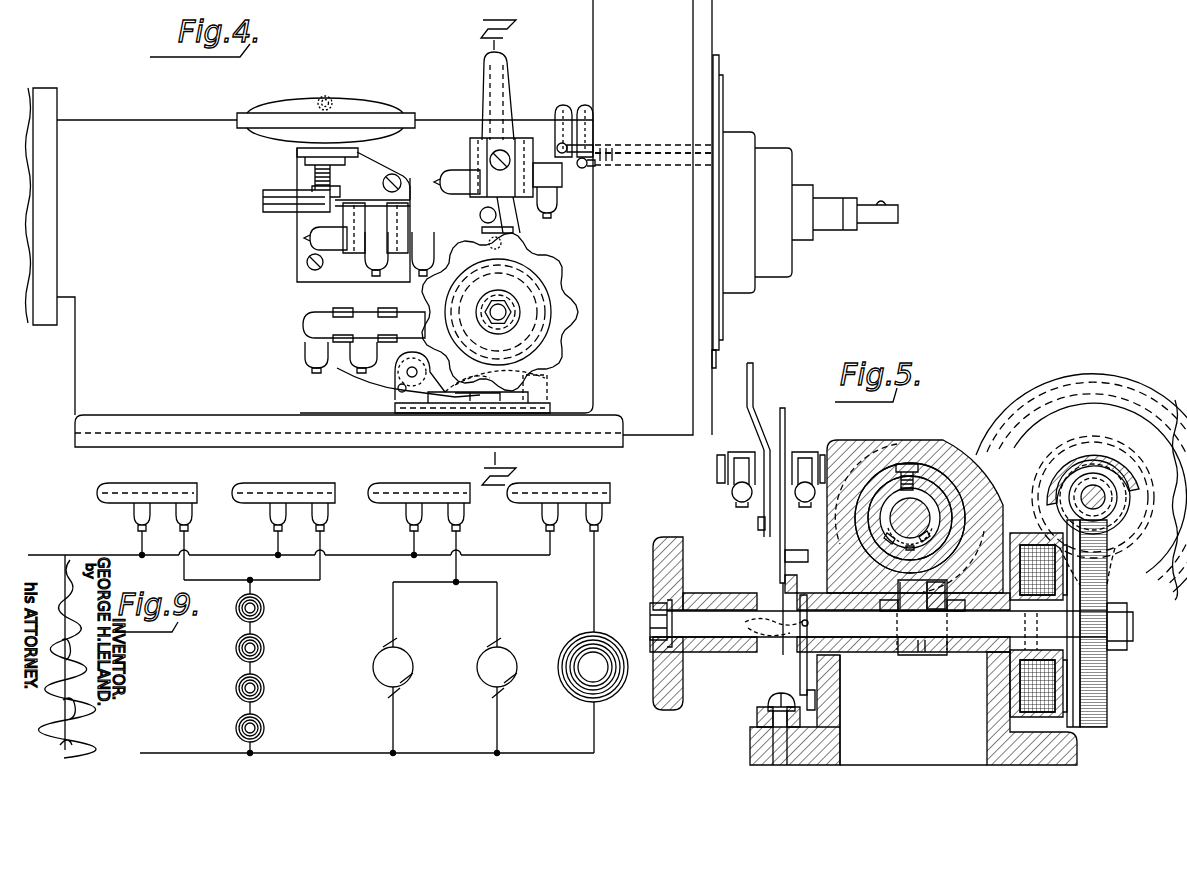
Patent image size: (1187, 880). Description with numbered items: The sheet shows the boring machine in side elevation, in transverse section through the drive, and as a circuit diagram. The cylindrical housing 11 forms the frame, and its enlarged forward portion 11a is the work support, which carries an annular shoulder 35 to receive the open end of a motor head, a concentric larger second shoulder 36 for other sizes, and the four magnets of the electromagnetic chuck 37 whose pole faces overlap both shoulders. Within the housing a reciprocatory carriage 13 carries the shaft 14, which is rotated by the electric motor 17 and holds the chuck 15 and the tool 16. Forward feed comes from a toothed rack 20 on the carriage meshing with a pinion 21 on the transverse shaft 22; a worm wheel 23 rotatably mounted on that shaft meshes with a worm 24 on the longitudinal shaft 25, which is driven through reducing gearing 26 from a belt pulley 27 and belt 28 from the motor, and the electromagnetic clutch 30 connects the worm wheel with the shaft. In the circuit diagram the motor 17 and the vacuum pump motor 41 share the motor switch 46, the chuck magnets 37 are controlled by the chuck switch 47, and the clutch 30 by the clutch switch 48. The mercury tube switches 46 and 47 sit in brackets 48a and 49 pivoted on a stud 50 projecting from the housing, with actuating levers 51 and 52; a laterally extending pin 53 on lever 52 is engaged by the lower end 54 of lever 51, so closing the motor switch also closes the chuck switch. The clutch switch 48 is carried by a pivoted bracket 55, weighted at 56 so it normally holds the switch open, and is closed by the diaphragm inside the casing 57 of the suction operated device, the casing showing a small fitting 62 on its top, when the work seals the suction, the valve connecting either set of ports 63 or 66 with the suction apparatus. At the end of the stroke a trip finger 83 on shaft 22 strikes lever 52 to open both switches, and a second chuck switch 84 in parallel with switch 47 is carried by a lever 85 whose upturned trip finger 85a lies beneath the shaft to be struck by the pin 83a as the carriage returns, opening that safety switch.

In FIG. 4, the cylindrical housing 11 is at (125, 138).
In FIG. 5, the cylindrical housing 11 is at (909, 458).
In FIG. 4, the enlarged forward portion of housing 11a is at (667, 217).
In FIG. 5, the reciprocatory carriage 13 is at (887, 490).
In FIG. 5, the shaft 14 is at (925, 510).
In FIG. 4, the chuck 15 is at (830, 218).
In FIG. 4, the tool 16 is at (876, 216).
In FIG. 4, the electric motor 17 is at (36, 87).
In FIG. 9, the electric motor 17 is at (500, 667).
In FIG. 5, the toothed rack 20 is at (878, 625).
In FIG. 5, the pinion 21 is at (908, 647).
In FIG. 4, the transverse shaft 22 is at (505, 308).
In FIG. 5, the transverse shaft 22 is at (930, 618).
In FIG. 5, the worm wheel 23 is at (1107, 684).
In FIG. 5, the worm 24 is at (1091, 470).
In FIG. 5, the shaft 25 is at (1099, 489).
In FIG. 5, the reducing gearing 26 is at (1082, 510).
In FIG. 5, the belt pulley 27 is at (1015, 432).
In FIG. 5, the belt 28 is at (980, 445).
In FIG. 9, the electro-magnetic clutch 30 is at (578, 684).
In FIG. 5, the electro-magnetic clutch 30 is at (1015, 690).
In FIG. 4, the annular shoulder 35 is at (723, 333).
In FIG. 4, the second shoulder 36 is at (714, 368).
In FIG. 9, the electro-magnetic chuck magnets 37 is at (264, 641).
In FIG. 9, the vacuum pump motor 41 is at (396, 667).
In FIG. 4, the motor switch 46 is at (455, 180).
In FIG. 9, the motor switch 46 is at (420, 491).
In FIG. 5, the motor switch 46 is at (742, 496).
In FIG. 9, the chuck switch 47 is at (150, 491).
In FIG. 5, the chuck switch 47 is at (805, 496).
In FIG. 4, the clutch switch 48 is at (325, 238).
In FIG. 9, the clutch switch 48 is at (576, 491).
In FIG. 5, the bracket 48a is at (738, 445).
In FIG. 5, the bracket 49 is at (805, 452).
In FIG. 4, the stud 50 is at (470, 153).
In FIG. 5, the stud 50 is at (716, 462).
In FIG. 4, the actuating lever 51 is at (498, 80).
In FIG. 5, the actuating lever 51 is at (752, 409).
In FIG. 4, the actuating lever 52 is at (502, 100).
In FIG. 5, the actuating lever 52 is at (787, 411).
In FIG. 4, the laterally extending pin 53 is at (482, 213).
In FIG. 5, the laterally extending pin 53 is at (780, 530).
In FIG. 4, the lower end of lever 54 is at (520, 205).
In FIG. 5, the lower end of lever 54 is at (770, 520).
In FIG. 4, the pivoted bracket 55 is at (372, 198).
In FIG. 4, the weight 56 is at (277, 213).
In FIG. 4, the casing 57 is at (283, 108).
In FIG. 4, the rivet 62 is at (340, 100).
In FIG. 4, the ports 63 is at (656, 166).
In FIG. 4, the ports 66 is at (634, 147).
In FIG. 4, the trip finger 83 is at (484, 230).
In FIG. 5, the trip finger 83 is at (780, 557).
In FIG. 4, the pin 83a is at (516, 249).
In FIG. 5, the pin 83a is at (804, 543).
In FIG. 4, the second chuck switch 84 is at (315, 331).
In FIG. 9, the second chuck switch 84 is at (307, 491).
In FIG. 5, the second chuck switch 84 is at (760, 625).
In FIG. 4, the lever 85 is at (390, 379).
In FIG. 5, the lever 85 is at (800, 683).
In FIG. 4, the upturned end or trip finger 85a is at (540, 388).
In FIG. 5, the upturned end or trip finger 85a is at (812, 701).